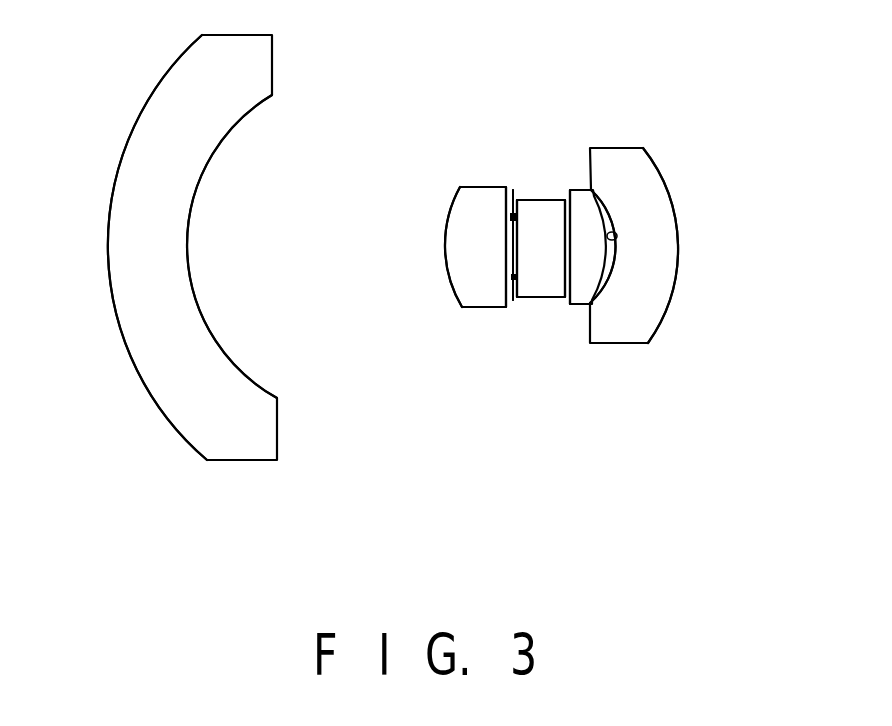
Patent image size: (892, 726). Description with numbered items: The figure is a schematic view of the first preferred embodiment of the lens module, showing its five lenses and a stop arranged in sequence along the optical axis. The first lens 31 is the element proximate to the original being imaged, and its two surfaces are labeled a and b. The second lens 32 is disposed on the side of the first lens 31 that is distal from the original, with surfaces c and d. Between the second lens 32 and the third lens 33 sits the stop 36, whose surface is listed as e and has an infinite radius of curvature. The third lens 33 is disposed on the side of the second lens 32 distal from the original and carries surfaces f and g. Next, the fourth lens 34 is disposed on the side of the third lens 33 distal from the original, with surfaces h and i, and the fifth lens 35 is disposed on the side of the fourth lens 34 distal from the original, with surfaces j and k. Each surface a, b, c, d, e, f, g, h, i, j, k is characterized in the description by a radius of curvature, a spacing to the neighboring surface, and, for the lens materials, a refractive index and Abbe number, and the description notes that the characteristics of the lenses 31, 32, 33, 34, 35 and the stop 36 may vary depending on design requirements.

The first lens 31 is at (250, 461).
The second lens 32 is at (488, 304).
The third lens 33 is at (550, 288).
The fourth lens 34 is at (580, 305).
The fifth lens 35 is at (627, 343).
The stop 36 is at (513, 300).
The lens surface a is at (108, 248).
The lens surface b is at (186, 248).
The lens surface c is at (444, 246).
The lens surface d is at (513, 190).
The stop surface e is at (499, 316).
The lens surface f is at (515, 200).
The lens surface g is at (566, 220).
The lens surface h is at (568, 190).
The lens surface i is at (614, 230).
The lens surface j is at (617, 235).
The lens surface k is at (678, 248).